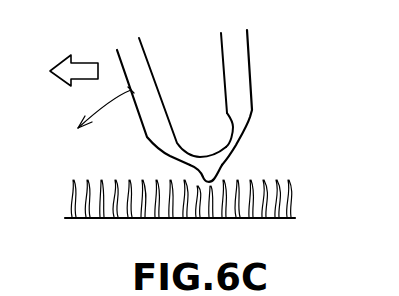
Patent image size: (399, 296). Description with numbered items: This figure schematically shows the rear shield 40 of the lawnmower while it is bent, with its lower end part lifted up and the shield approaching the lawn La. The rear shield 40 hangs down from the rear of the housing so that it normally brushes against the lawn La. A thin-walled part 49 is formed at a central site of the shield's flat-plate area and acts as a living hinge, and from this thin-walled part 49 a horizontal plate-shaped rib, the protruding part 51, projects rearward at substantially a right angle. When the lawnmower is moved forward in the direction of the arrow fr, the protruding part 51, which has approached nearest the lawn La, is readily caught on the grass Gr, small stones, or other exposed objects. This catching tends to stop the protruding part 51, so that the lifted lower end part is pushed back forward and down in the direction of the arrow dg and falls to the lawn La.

The rear shield 40 is at (251, 52).
The thin-walled part 49 is at (241, 140).
The protruding part 51 is at (223, 170).
The grass Gr is at (279, 186).
The lawn La is at (295, 218).
The forward direction fr is at (60, 71).
The direction of pushing back dg is at (87, 115).